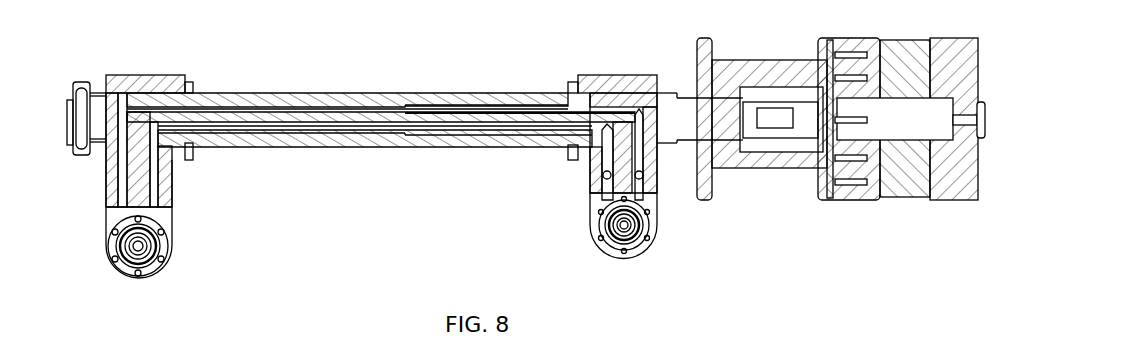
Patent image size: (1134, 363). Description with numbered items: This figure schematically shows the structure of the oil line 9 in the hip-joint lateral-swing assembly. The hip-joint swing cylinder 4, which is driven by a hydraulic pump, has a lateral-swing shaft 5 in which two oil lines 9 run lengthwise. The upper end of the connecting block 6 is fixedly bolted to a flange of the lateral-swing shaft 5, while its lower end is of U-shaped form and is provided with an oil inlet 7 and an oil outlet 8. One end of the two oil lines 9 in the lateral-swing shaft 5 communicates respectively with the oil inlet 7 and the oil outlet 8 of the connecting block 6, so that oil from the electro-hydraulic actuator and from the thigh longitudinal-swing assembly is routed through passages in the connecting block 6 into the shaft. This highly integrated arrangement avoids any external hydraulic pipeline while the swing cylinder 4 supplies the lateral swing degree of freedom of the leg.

The hip-joint swing cylinder 4 is at (902, 180).
The lateral-swing shaft 5 is at (352, 96).
The connecting block 6 is at (165, 212).
The oil inlet 7 is at (604, 178).
The oil outlet 8 is at (642, 178).
The oil line 9 is at (497, 108).